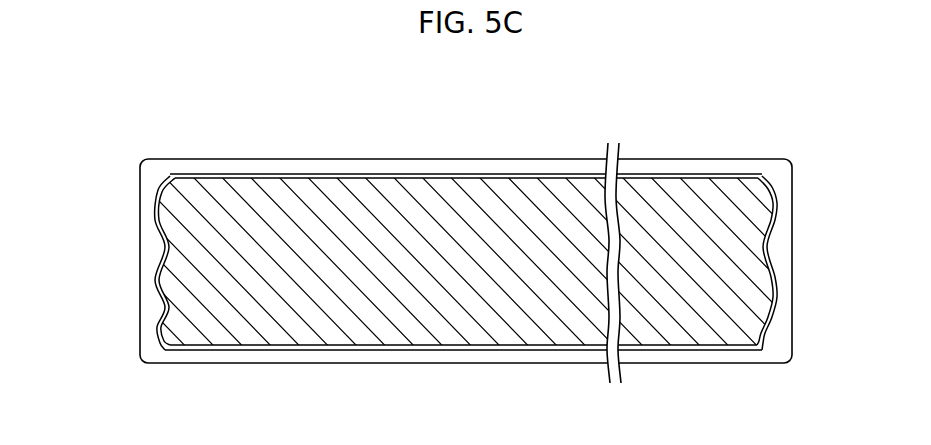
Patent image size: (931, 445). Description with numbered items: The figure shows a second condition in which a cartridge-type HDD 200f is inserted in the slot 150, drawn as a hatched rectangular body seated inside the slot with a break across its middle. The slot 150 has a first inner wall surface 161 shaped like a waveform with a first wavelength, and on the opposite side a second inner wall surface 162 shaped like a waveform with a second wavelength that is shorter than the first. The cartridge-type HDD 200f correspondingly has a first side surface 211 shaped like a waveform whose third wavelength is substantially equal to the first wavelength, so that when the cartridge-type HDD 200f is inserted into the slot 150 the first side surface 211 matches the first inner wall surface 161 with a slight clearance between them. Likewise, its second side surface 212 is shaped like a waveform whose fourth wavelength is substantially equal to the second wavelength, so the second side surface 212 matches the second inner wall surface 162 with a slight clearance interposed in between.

The slot 150 is at (461, 148).
The cartridge-type HDD 200f is at (433, 320).
The first side surface 211 is at (173, 200).
The second side surface 212 is at (748, 183).
The first inner wall surface 161 is at (156, 197).
The second inner wall surface 162 is at (776, 196).